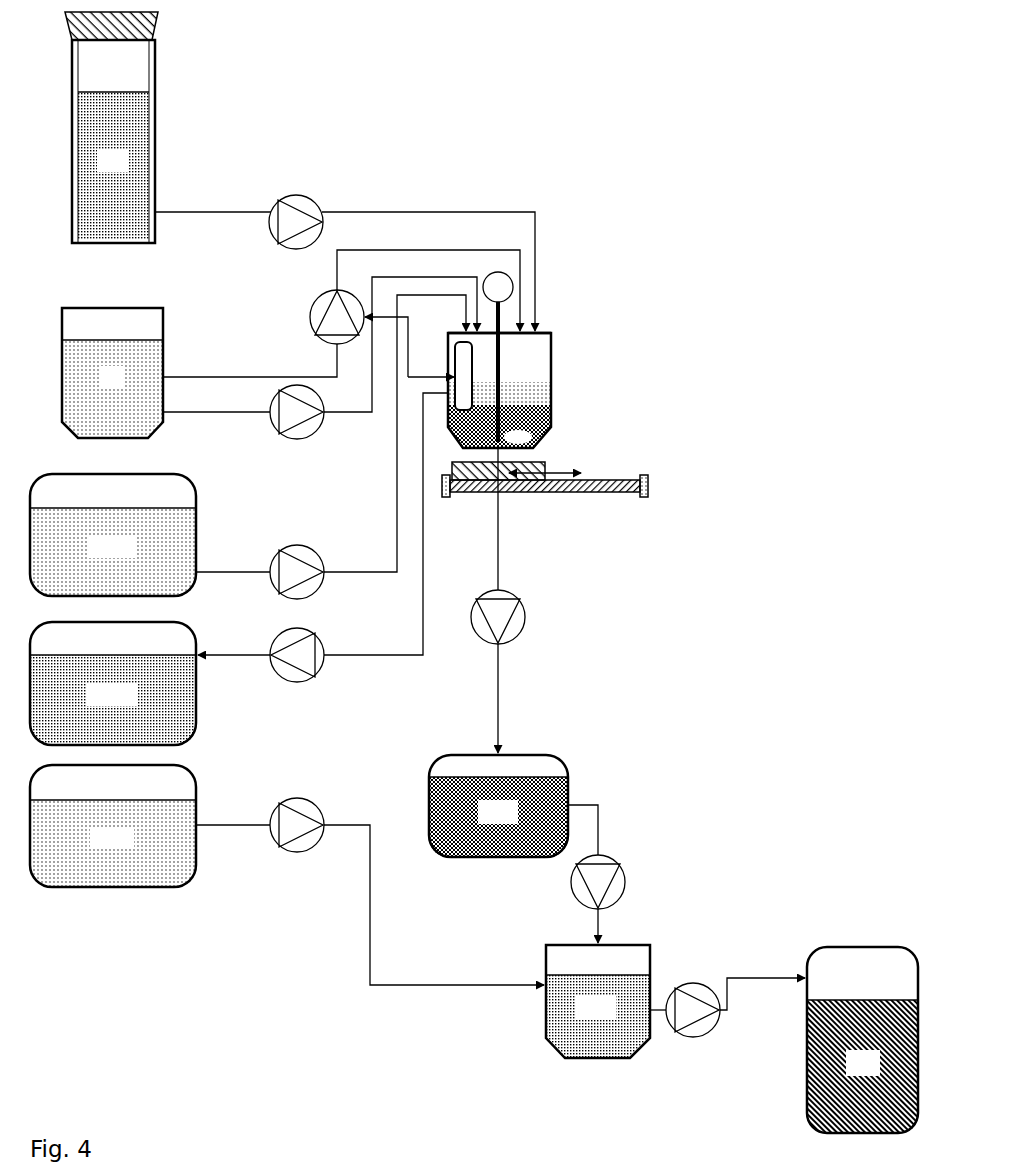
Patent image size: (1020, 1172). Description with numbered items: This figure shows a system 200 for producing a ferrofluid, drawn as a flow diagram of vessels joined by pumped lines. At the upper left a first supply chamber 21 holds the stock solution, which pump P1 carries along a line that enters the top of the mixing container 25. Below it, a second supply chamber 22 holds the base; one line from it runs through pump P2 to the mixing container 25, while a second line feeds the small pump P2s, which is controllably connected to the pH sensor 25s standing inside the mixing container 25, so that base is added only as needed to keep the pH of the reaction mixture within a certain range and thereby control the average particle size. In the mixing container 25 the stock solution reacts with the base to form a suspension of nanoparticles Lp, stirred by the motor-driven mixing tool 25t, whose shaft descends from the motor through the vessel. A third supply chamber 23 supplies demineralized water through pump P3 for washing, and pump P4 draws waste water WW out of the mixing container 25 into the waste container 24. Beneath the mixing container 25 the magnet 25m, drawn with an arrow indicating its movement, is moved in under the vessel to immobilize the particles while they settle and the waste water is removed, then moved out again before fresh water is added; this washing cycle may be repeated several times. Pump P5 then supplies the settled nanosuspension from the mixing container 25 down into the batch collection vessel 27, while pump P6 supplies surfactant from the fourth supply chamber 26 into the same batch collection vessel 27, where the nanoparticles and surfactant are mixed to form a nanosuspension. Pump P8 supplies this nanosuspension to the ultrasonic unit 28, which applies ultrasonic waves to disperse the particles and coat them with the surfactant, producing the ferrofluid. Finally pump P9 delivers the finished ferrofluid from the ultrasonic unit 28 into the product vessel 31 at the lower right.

The system for producing a ferrofluid 200 is at (724, 130).
The first supply chamber 21 is at (158, 123).
The second supply chamber 22 is at (168, 352).
The third supply chamber 23 is at (200, 517).
The waste container 24 is at (199, 708).
The mixing container 25 is at (538, 365).
The pH sensor 25s is at (479, 370).
The mixing tool 25t is at (549, 423).
The magnet 25m is at (515, 500).
The waste water WW is at (524, 397).
The suspension of nanoparticles Lp is at (527, 438).
The fourth supply chamber 26 is at (200, 804).
The batch collection vessel 27 is at (571, 767).
The ultrasonic unit 28 is at (654, 959).
The product vessel 31 is at (809, 949).
The pump P1 is at (309, 219).
The pump P2 is at (309, 409).
The pump P2s is at (316, 317).
The pump P3 is at (309, 569).
The pump P4 is at (309, 653).
The pump P5 is at (505, 607).
The pump P6 is at (309, 822).
The pump P8 is at (606, 878).
The pump P9 is at (700, 1018).